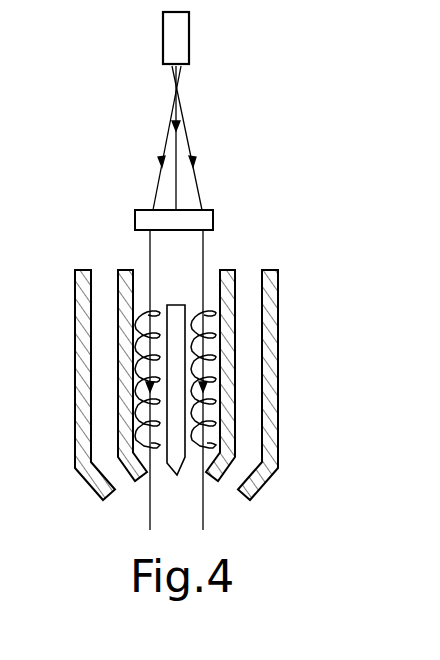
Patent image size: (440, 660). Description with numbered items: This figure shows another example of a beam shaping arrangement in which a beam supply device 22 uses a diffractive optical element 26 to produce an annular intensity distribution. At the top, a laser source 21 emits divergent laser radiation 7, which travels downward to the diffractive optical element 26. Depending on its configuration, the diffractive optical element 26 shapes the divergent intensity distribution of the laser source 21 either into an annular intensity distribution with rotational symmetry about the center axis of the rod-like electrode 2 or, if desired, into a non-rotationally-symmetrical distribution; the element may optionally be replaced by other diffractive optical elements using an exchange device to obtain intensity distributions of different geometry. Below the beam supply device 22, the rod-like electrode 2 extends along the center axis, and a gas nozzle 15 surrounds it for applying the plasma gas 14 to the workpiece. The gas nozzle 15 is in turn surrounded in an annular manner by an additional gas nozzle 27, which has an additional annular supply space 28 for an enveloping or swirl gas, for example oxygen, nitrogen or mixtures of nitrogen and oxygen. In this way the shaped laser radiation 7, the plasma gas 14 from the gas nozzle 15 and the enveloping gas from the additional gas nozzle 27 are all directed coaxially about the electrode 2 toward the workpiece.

The rod-like electrode 2 is at (203, 382).
The laser radiation 7 is at (148, 250).
The plasma gas 14 is at (150, 382).
The gas nozzle 15 is at (128, 298).
The laser source 21 is at (178, 40).
The beam supply device 22 is at (121, 127).
The diffractive optical element 26 is at (213, 220).
The additional gas nozzle 27 is at (272, 340).
The additional annular supply space 28 is at (250, 408).